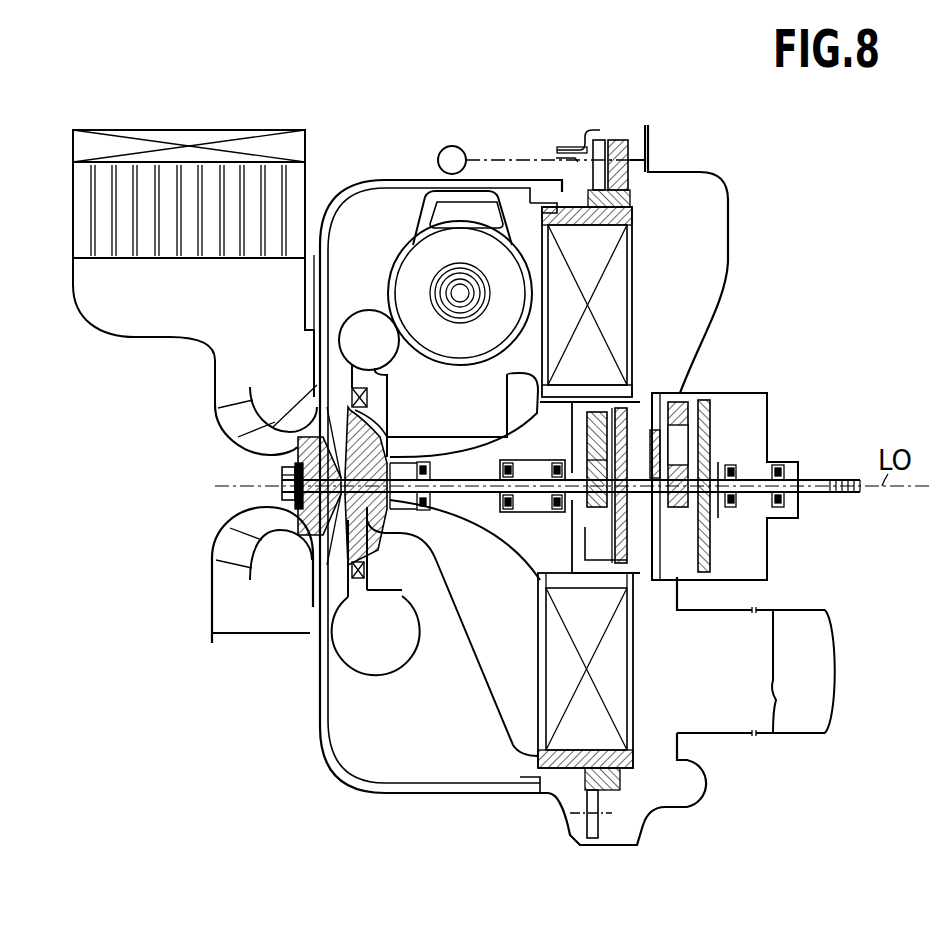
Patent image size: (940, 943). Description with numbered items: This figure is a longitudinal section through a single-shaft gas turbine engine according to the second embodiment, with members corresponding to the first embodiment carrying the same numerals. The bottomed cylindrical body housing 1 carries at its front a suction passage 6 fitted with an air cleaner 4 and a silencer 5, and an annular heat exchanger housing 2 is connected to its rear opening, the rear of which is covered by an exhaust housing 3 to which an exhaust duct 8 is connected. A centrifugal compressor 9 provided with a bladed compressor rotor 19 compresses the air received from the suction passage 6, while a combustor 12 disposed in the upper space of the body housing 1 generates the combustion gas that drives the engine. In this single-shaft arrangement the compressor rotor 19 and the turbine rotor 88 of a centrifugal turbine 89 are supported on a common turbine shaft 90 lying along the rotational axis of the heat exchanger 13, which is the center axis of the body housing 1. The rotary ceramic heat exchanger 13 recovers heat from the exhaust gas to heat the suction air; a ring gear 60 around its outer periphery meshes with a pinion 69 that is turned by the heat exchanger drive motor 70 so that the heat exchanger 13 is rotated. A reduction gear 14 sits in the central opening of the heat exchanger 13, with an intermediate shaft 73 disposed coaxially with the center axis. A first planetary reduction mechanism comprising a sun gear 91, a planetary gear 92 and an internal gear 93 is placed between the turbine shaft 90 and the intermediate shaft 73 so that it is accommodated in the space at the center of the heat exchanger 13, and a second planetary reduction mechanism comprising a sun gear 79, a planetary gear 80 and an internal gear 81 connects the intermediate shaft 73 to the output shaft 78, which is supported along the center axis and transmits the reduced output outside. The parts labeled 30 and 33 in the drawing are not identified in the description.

The body housing 1 is at (392, 178).
The heat exchanger housing 2 is at (597, 138).
The exhaust housing 3 is at (690, 172).
The air cleaner 4 is at (78, 143).
The silencer 5 is at (78, 198).
The suction passage 6 is at (77, 283).
The exhaust duct 8 is at (797, 612).
The centrifugal compressor 9 is at (307, 404).
The combustor 12 is at (408, 222).
The rotary type heat exchanger 13 is at (640, 243).
The reduction gear 14 is at (742, 415).
The compressor rotor 19 is at (312, 537).
The passage 30 is at (411, 643).
The partition wall 33 is at (491, 696).
The ring gear 60 is at (600, 812).
The pinion 69 is at (620, 140).
The heat exchanger drive motor 70 is at (458, 148).
The intermediate shaft 73 is at (605, 681).
The output shaft 78 is at (800, 488).
The sun gear 79 is at (679, 510).
The planetary gear 80 is at (660, 393).
The internal gear 81 is at (705, 400).
The turbine rotor 88 is at (375, 520).
The centrifugal turbine 89 is at (380, 403).
The turbine shaft 90 is at (482, 495).
The sun gear 91 is at (590, 510).
The planetary gear 92 is at (585, 440).
The internal gear 93 is at (608, 396).